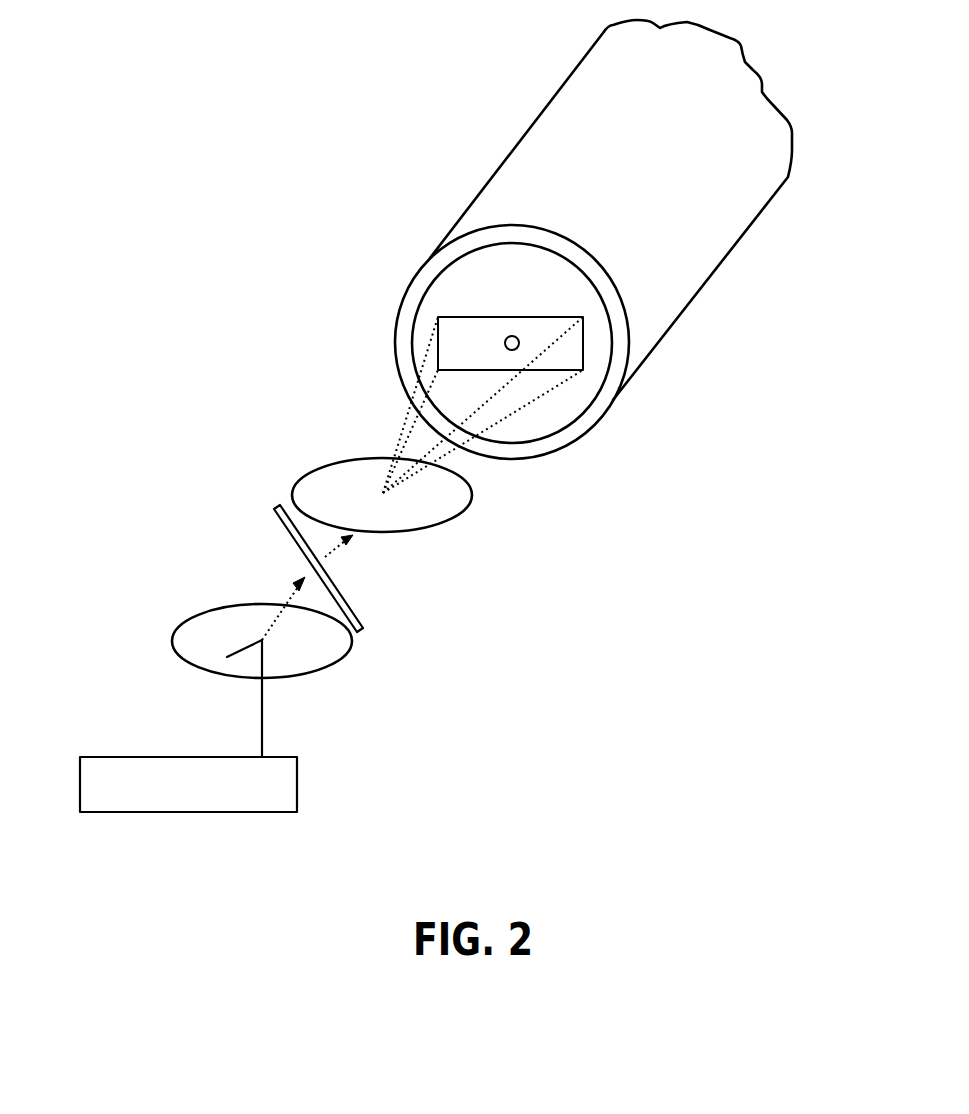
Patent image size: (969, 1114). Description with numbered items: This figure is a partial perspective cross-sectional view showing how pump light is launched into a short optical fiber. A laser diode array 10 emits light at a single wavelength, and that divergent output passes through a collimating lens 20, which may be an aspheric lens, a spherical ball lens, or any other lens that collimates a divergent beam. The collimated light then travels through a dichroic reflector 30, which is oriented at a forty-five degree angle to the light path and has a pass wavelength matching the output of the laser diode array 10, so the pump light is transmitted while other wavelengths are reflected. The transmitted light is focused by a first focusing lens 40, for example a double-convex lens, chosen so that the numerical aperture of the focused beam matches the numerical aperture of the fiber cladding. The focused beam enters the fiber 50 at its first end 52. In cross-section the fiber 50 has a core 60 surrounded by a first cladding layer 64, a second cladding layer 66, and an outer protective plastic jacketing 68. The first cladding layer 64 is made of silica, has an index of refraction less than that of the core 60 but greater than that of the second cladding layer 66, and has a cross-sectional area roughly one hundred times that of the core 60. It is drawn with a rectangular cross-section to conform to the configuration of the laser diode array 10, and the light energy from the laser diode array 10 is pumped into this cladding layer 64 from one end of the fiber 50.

The laser diode array 10 is at (297, 786).
The collimating lens 20 is at (327, 662).
The dichroic reflector 30 is at (348, 600).
The first focusing lens 40 is at (455, 512).
The fiber 50 is at (785, 182).
The first end 52 is at (516, 357).
The core 60 is at (516, 335).
The first cladding layer 64 is at (487, 326).
The second cladding layer 66 is at (418, 333).
The outer protective plastic jacketing 68 is at (398, 345).